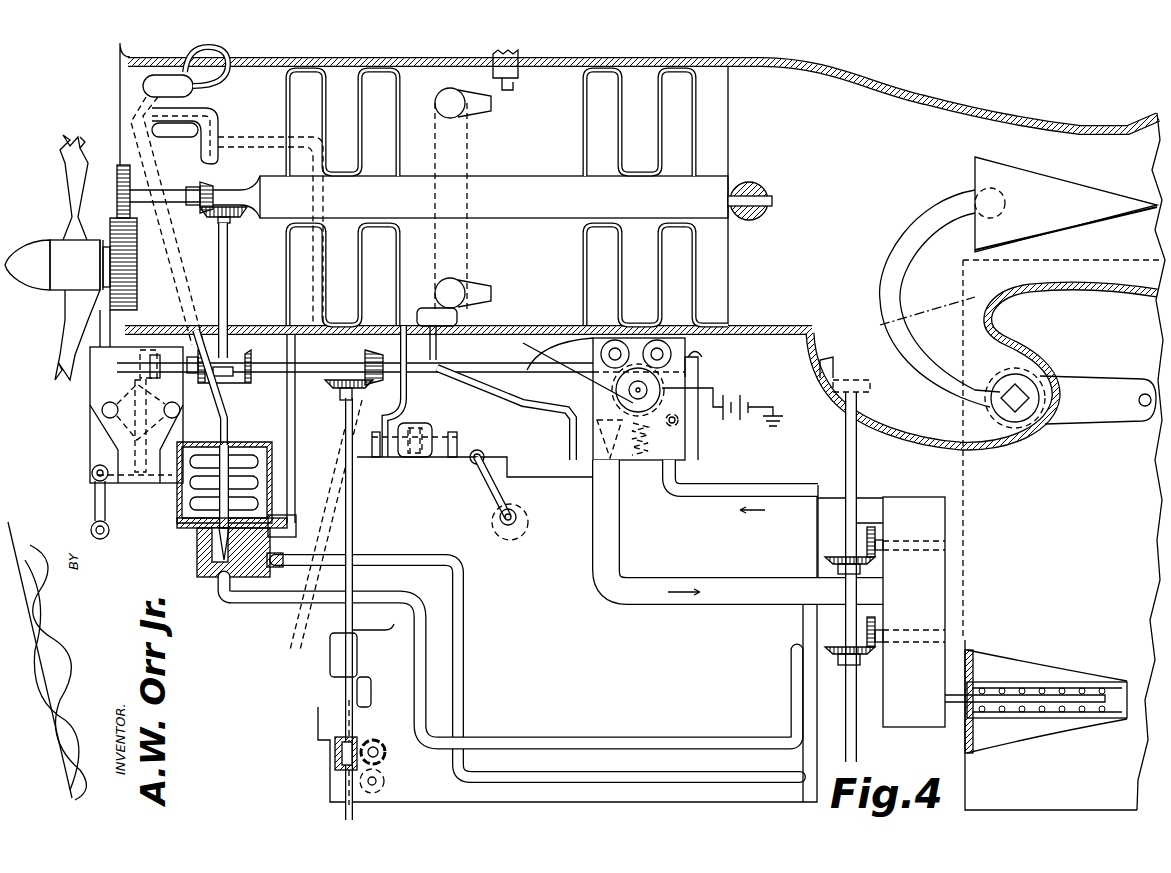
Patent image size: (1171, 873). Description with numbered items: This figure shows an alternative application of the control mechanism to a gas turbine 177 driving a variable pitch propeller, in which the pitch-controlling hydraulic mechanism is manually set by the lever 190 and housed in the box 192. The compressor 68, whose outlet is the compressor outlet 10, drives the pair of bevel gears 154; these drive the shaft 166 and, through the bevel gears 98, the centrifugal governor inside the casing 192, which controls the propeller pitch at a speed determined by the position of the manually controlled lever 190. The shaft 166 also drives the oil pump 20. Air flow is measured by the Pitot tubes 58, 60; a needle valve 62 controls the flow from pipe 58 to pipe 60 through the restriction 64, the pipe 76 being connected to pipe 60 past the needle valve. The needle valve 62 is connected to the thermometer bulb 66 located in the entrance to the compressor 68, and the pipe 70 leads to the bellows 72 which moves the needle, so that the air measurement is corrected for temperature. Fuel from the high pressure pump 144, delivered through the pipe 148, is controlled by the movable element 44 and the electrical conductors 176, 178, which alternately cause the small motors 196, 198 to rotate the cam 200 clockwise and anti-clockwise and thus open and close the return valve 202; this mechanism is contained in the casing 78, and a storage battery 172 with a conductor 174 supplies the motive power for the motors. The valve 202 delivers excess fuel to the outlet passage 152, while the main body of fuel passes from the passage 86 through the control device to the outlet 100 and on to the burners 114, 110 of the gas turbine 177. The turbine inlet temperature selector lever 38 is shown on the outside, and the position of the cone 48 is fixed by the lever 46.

The compressor outlet 10 is at (424, 255).
The oil pump 20 is at (386, 779).
The turbine inlet temperature selector lever 38 is at (494, 489).
The movable element 44 is at (414, 454).
The lever 46 is at (1100, 407).
The cone 48 is at (1054, 221).
The Pitot tube 58 is at (207, 124).
The Pitot tube 60 is at (205, 108).
The needle valve 62 is at (178, 521).
The restriction 64 is at (262, 576).
The thermometer bulb 66 is at (143, 85).
The compressor 68 is at (295, 92).
The pipe 70 is at (216, 51).
The bellows 72 is at (258, 445).
The pipe 76 is at (673, 741).
The casing 78 is at (613, 393).
The fuel passage 86 is at (648, 498).
The bevel gears 98 is at (344, 366).
The outlet pipe 100 is at (550, 430).
The burner 110 is at (441, 290).
The burner 114 is at (449, 91).
The high pressure pump 144 is at (919, 525).
The pipe 148 is at (686, 500).
The bypass passage 152 is at (774, 603).
The bevel gears 154 is at (207, 187).
The shaft 166 is at (354, 523).
The storage battery 172 is at (767, 430).
The conductor 174 is at (728, 421).
The electrical conductor 176 is at (416, 420).
The gas turbine 177 is at (654, 256).
The electrical conductor 178 is at (478, 455).
The manually controlled lever 190 is at (96, 514).
The governor casing 192 is at (89, 396).
The small electric motor 196 is at (672, 354).
The small electric motor 198 is at (600, 354).
The cam 200 is at (713, 393).
The return valve 202 is at (597, 452).